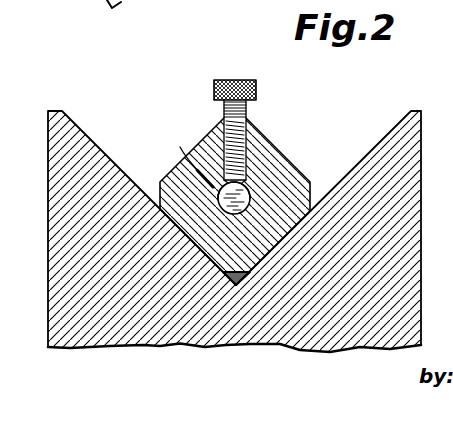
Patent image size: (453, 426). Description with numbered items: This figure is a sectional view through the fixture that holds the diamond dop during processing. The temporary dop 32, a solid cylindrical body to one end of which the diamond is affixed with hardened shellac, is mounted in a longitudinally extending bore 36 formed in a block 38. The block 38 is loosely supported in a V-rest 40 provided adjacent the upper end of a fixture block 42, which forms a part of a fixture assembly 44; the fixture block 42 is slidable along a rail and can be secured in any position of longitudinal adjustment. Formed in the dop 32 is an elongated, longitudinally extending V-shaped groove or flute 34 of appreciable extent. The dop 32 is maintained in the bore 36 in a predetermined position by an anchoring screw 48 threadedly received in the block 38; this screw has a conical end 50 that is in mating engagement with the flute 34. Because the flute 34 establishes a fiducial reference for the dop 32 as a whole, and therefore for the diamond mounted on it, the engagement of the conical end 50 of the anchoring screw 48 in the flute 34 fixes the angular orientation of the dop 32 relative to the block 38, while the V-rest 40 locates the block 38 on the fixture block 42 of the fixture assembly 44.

The temporary dop 32 is at (250, 191).
The V-shaped groove or flute 34 is at (248, 187).
The longitudinally extending bore 36 is at (251, 199).
The block 38 is at (178, 168).
The V-rest 40 is at (91, 140).
The fixture block 42 is at (164, 347).
The fixture assembly 44 is at (100, 364).
The anchoring screw 48 is at (256, 80).
The conical end 50 is at (192, 158).